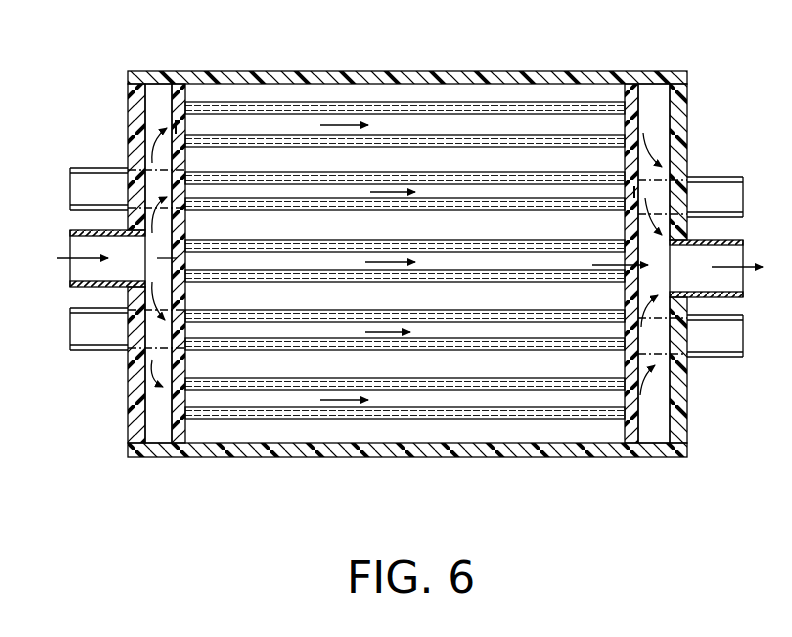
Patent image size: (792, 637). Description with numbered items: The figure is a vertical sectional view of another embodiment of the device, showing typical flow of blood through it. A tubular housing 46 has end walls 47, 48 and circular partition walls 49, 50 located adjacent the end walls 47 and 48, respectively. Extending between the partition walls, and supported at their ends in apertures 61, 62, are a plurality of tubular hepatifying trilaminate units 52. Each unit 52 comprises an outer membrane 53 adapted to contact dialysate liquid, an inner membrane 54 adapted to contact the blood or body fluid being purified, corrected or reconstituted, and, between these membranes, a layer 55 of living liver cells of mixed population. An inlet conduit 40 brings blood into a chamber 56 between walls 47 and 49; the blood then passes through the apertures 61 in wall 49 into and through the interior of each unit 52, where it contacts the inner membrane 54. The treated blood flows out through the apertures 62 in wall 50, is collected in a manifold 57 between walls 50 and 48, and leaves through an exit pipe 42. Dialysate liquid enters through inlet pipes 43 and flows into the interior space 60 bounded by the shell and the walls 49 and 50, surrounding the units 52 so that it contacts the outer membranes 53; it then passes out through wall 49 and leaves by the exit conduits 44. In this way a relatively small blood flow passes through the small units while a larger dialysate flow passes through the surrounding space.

The inlet conduit 40 is at (72, 232).
The exit pipe 42 is at (737, 243).
The inlet pipes 43 is at (720, 178).
The exit conduits 44 is at (72, 186).
The tubular housing 46 is at (405, 66).
The end wall 47 is at (128, 107).
The end wall 48 is at (688, 108).
The circular partition wall 49 is at (178, 88).
The circular partition wall 50 is at (641, 100).
The tubular hepatifying trilaminate unit 52 is at (464, 98).
The outer membrane 53 is at (353, 102).
The inner membrane 54 is at (418, 116).
The layer of living liver cells 55 is at (262, 102).
The chamber 56 is at (157, 132).
The manifold 57 is at (683, 128).
The interior space 60 is at (331, 236).
The apertures 61 is at (184, 122).
The apertures 62 is at (629, 197).